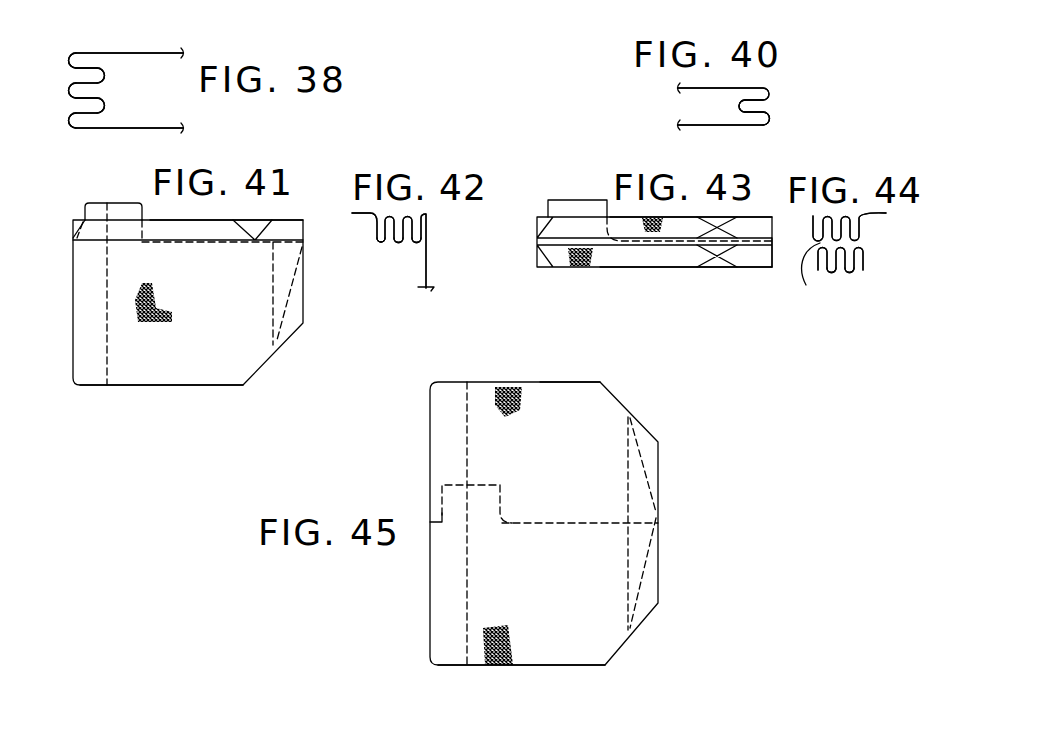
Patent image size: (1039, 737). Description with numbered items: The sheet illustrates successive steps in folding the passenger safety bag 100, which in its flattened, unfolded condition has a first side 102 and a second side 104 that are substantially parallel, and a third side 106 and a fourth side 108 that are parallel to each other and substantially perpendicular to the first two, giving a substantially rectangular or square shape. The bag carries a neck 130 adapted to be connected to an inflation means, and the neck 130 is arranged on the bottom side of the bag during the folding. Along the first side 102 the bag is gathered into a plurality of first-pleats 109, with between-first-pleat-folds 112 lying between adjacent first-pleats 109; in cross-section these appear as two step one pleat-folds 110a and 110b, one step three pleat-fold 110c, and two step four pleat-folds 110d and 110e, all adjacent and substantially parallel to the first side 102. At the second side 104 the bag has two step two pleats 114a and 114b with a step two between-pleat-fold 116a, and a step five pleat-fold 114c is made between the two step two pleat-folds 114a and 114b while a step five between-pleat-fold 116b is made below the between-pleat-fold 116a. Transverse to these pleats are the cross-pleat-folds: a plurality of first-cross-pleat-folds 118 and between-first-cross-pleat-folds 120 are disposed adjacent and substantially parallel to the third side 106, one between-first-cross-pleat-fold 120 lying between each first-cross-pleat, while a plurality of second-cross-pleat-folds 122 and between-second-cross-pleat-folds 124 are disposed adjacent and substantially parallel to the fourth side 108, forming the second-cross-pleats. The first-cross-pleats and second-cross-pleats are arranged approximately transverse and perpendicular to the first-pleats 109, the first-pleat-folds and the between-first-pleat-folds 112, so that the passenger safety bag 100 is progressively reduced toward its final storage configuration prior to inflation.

In FIG. 45, the passenger safety bag 100 is at (690, 534).
In FIG. 41, the first side 102 is at (73, 310).
In FIG. 43, the first side 102 is at (537, 241).
In FIG. 45, the first side 102 is at (430, 580).
In FIG. 41, the second side 104 is at (303, 295).
In FIG. 43, the second side 104 is at (772, 255).
In FIG. 45, the second side 104 is at (658, 485).
In FIG. 41, the third side 106 is at (163, 218).
In FIG. 43, the third side 106 is at (722, 217).
In FIG. 45, the third side 106 is at (553, 382).
In FIG. 41, the fourth side 108 is at (183, 386).
In FIG. 43, the fourth side 108 is at (610, 268).
In FIG. 45, the fourth side 108 is at (510, 665).
In FIG. 38, the first-pleats 109 is at (120, 49).
In FIG. 38, the step one pleat-fold 110a is at (73, 24).
In FIG. 38, the step one pleat-fold 110b is at (62, 155).
In FIG. 38, the step three pleat-fold 110c is at (50, 72).
In FIG. 38, the step four pleat-fold 110d is at (48, 52).
In FIG. 38, the step four pleat-fold 110e is at (50, 103).
In FIG. 38, the between-first-pleat-folds 112 is at (104, 114).
In FIG. 40, the step two pleat 114a is at (837, 87).
In FIG. 40, the step two pleat 114b is at (847, 133).
In FIG. 40, the step five pleat-fold 114c is at (846, 108).
In FIG. 40, the step two between-pleat-fold 116a is at (721, 110).
In FIG. 40, the step five between-pleat-fold 116b is at (733, 133).
In FIG. 42, the first-cross-pleat-folds 118 is at (454, 216).
In FIG. 44, the first-cross-pleat-folds 118 is at (868, 224).
In FIG. 42, the between-first-cross-pleat-folds 120 is at (413, 245).
In FIG. 44, the second-cross-pleat-folds 122 is at (840, 270).
In FIG. 44, the between-second-cross-pleat-folds 124 is at (845, 243).
In FIG. 41, the neck 130 is at (125, 205).
In FIG. 43, the neck 130 is at (567, 200).
In FIG. 45, the neck 130 is at (503, 488).